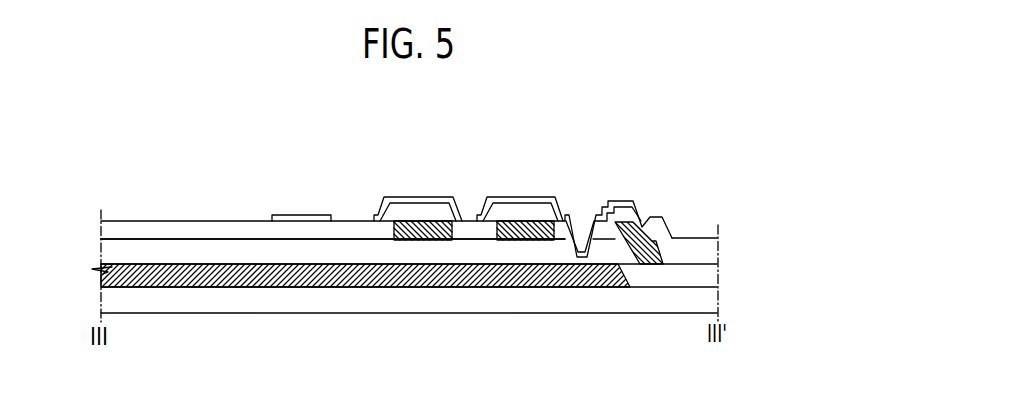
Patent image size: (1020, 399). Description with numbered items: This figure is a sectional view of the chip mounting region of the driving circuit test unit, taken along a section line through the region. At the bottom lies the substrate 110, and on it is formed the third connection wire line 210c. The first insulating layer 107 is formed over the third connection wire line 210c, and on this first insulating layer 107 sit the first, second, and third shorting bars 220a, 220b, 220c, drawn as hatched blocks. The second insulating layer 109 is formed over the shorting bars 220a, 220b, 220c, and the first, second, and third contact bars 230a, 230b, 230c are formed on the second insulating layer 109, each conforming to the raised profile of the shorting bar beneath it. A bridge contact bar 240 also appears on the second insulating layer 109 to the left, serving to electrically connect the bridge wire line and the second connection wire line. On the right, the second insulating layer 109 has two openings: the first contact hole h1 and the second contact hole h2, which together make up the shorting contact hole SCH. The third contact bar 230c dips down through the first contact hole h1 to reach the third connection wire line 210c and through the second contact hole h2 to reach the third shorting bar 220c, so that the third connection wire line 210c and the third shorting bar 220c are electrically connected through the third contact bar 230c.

The substrate 110 is at (717, 303).
The second insulating layer 109 is at (718, 246).
The first insulating layer 107 is at (728, 276).
The third connection wire line 210c is at (262, 282).
The bridge contact bar 240 is at (303, 215).
The first shorting bar 220a is at (413, 232).
The second shorting bar 220b is at (522, 232).
The third shorting bar 220c is at (656, 252).
The first contact bar 230a is at (415, 197).
The second contact bar 230b is at (518, 197).
The third contact bar 230c is at (618, 200).
The first contact hole h1 is at (584, 222).
The second contact hole h2 is at (642, 222).
The shorting contact hole SCH is at (685, 92).